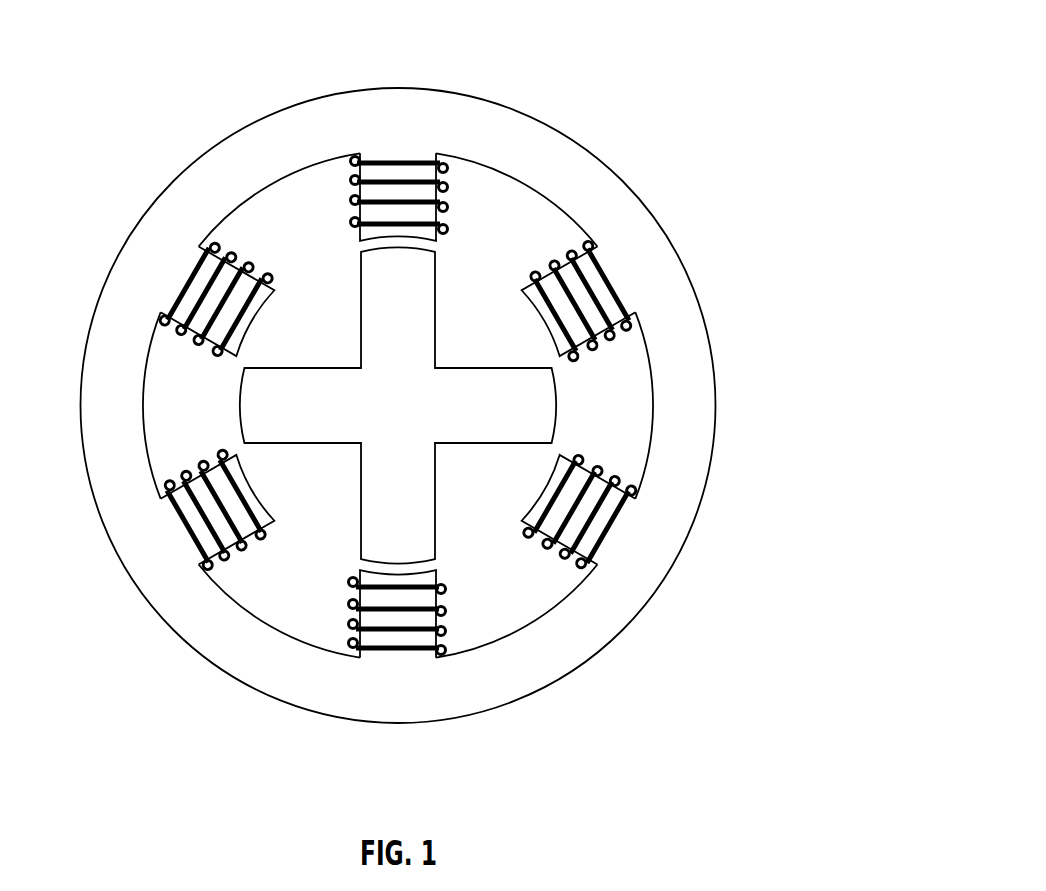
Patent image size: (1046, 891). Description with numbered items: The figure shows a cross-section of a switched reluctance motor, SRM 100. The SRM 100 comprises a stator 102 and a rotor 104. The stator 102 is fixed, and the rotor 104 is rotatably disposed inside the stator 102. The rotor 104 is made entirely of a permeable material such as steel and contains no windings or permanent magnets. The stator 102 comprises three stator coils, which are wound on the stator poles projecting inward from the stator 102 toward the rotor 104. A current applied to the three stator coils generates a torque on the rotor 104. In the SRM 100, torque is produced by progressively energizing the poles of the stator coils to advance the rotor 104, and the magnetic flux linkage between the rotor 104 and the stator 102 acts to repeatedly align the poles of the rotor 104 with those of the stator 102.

The SRM 100 is at (641, 66).
The stator 102 is at (667, 325).
The rotor 104 is at (452, 392).